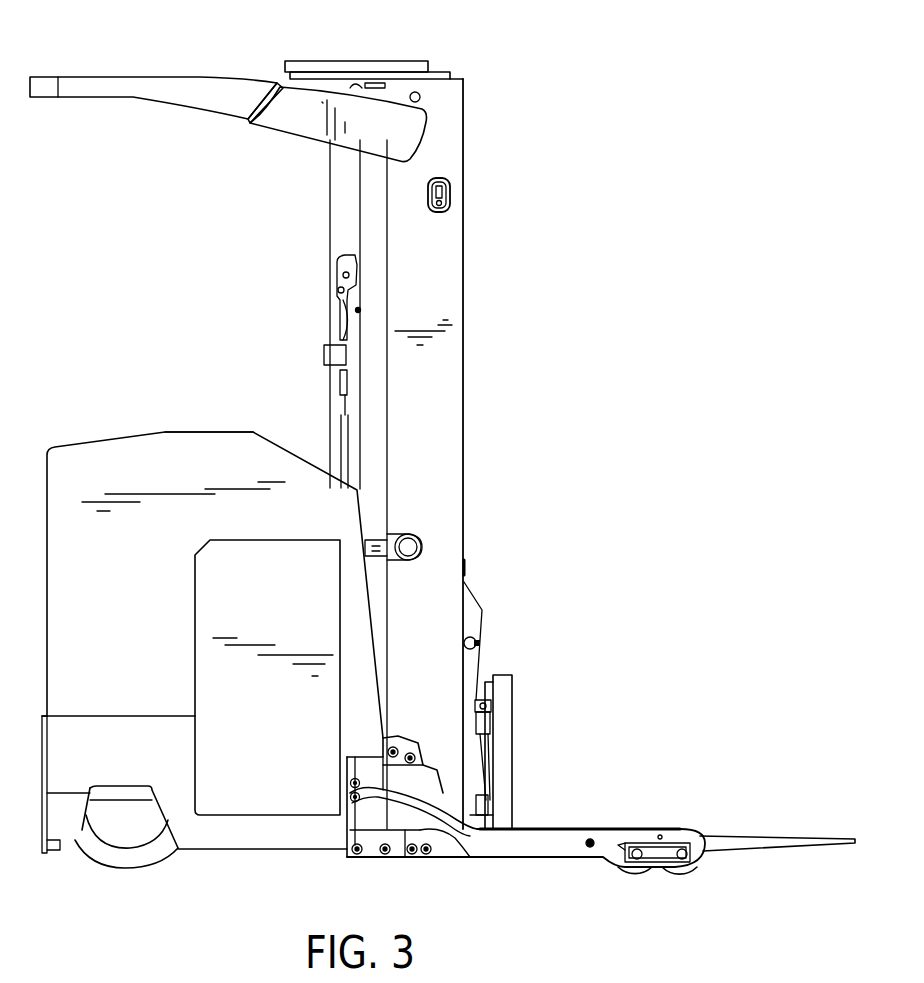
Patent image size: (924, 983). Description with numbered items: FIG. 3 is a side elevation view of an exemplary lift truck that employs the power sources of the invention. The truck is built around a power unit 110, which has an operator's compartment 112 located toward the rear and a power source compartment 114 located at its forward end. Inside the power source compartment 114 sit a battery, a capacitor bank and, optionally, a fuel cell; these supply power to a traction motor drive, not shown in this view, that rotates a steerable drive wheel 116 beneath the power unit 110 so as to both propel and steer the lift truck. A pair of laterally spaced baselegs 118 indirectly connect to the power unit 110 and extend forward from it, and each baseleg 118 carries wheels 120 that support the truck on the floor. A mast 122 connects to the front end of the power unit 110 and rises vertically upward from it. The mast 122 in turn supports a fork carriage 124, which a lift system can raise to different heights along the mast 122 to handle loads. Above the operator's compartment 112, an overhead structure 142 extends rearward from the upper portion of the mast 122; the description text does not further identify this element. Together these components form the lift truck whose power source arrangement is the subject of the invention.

The power unit 110 is at (68, 600).
The operator's compartment 112 is at (105, 385).
The power source compartment 114 is at (275, 728).
The steerable drive wheel 116 is at (125, 868).
The baseleg 118 is at (500, 848).
The wheels 120 is at (690, 877).
The mast 122 is at (483, 248).
The fork carriage 124 is at (545, 767).
The overhead guard arm 142 is at (125, 74).